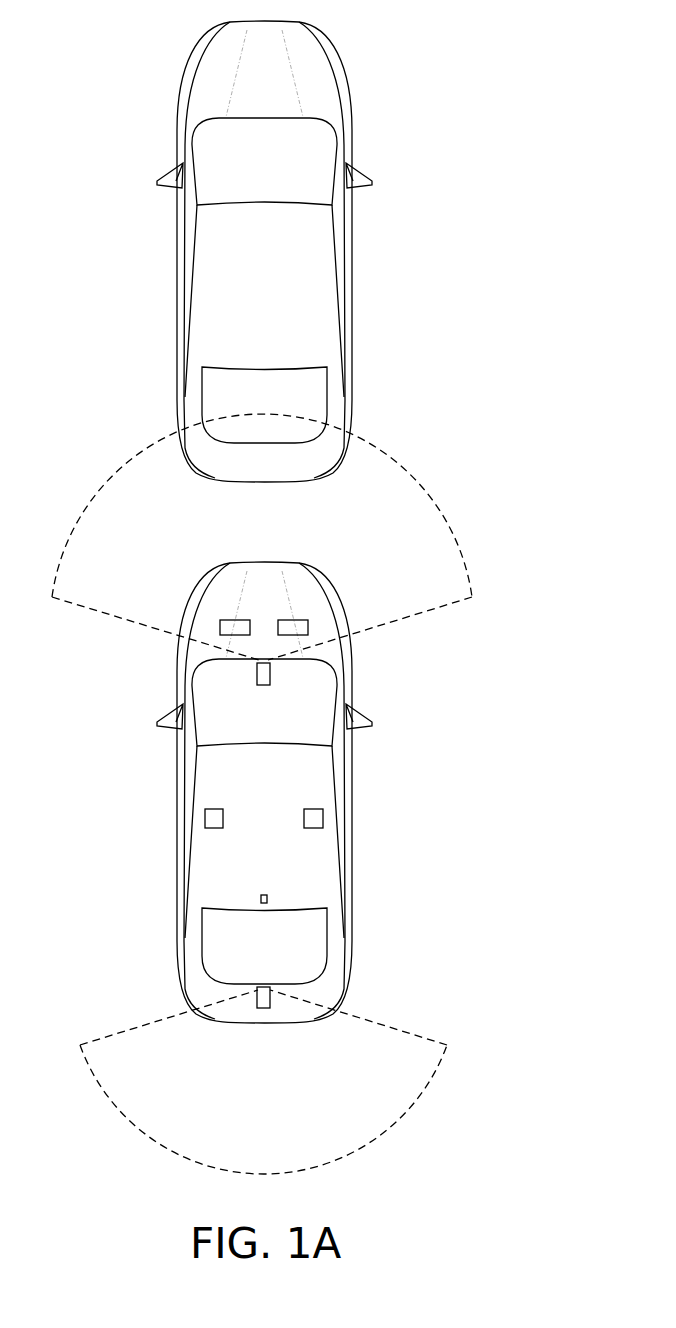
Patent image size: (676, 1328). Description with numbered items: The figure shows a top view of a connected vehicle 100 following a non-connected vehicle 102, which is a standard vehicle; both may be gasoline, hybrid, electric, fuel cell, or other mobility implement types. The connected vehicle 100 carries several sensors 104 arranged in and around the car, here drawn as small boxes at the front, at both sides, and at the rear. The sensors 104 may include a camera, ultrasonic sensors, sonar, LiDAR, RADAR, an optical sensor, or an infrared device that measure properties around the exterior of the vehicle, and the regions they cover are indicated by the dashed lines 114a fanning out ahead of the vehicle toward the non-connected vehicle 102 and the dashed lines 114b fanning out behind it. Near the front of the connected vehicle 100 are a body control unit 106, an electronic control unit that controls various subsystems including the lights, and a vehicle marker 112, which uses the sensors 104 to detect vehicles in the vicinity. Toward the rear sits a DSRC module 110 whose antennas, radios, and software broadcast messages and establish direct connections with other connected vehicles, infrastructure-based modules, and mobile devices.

The connected vehicle 100 is at (346, 945).
The non-connected vehicle 102 is at (352, 100).
The sensors 104 is at (270, 675).
The body control unit 106 is at (228, 620).
The DSRC module 110 is at (267, 897).
The vehicle marker 112 is at (300, 620).
The dashed lines 114a is at (441, 504).
The dashed lines 114b is at (410, 1108).